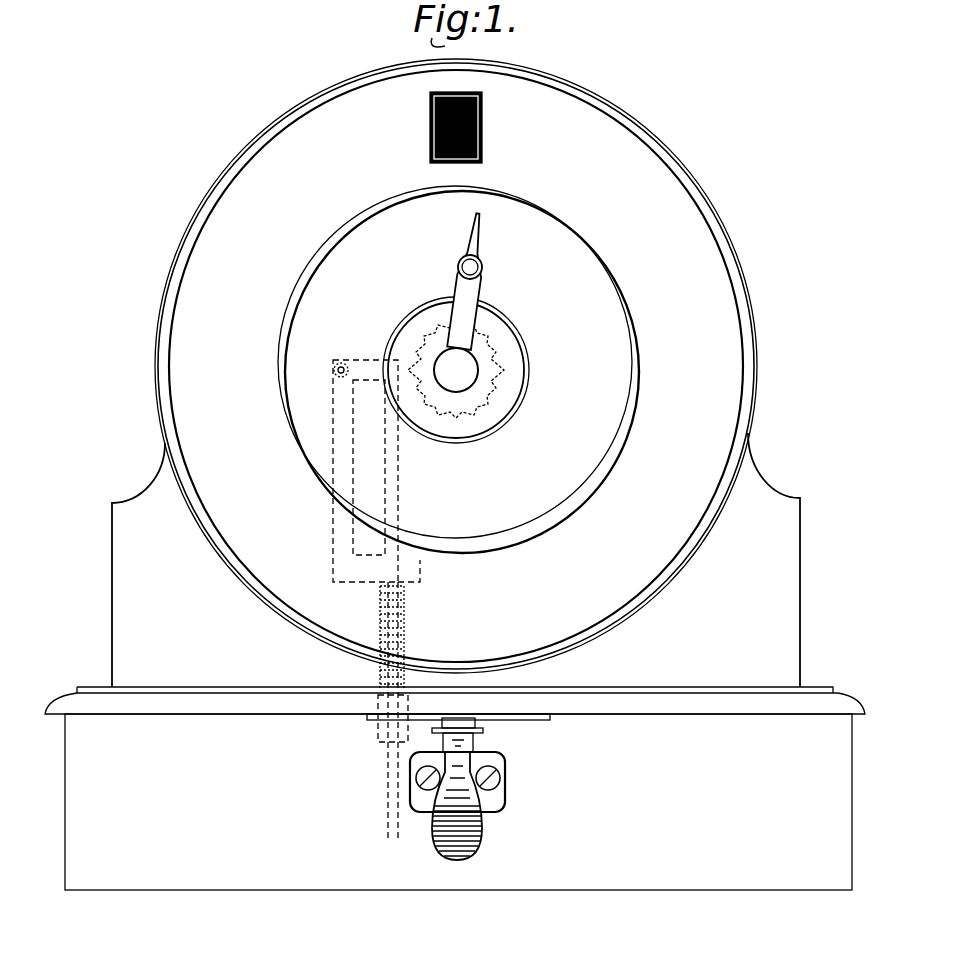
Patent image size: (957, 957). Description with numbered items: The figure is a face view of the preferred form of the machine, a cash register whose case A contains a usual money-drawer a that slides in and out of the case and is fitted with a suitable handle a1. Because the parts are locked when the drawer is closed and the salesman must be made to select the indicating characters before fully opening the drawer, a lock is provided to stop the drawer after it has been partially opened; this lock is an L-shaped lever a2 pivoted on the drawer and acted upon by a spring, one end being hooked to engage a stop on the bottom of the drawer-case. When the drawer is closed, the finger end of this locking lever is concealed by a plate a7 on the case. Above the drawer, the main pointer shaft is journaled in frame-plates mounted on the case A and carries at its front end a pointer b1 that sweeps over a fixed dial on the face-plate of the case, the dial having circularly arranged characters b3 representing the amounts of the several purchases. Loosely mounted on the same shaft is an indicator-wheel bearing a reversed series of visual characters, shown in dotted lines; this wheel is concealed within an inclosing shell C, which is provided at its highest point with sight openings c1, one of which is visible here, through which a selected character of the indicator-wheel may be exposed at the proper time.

The case A is at (88, 690).
The money-drawer a is at (210, 792).
The handle a1 is at (483, 830).
The L-shaped lever a2 is at (483, 730).
The plate a7 is at (528, 720).
The inclosing case or shell C is at (160, 318).
The sight opening c1 is at (482, 104).
The pointer b1 is at (478, 297).
The characters b3 is at (583, 304).